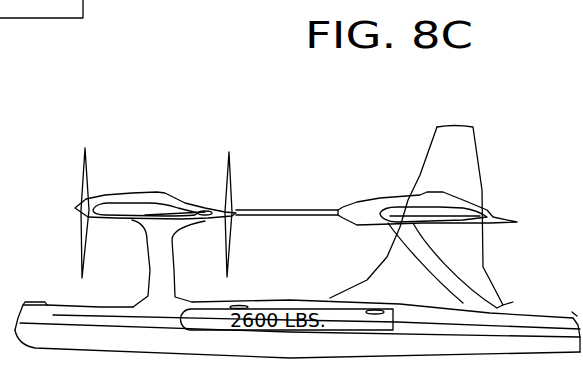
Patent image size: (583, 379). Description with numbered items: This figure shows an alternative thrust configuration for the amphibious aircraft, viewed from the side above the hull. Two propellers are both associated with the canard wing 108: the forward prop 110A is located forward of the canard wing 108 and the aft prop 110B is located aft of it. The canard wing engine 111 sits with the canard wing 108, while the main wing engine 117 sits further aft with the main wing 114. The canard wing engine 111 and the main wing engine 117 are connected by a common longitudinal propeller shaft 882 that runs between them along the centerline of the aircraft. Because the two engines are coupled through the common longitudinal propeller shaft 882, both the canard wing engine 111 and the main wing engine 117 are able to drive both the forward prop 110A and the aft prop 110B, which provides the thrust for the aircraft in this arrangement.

The canard wing 108 is at (115, 220).
The canard wing engine 111 is at (137, 193).
The forward prop 110A is at (78, 161).
The aft prop 110B is at (233, 163).
The common longitudinal propeller shaft 882 is at (297, 206).
The main wing engine 117 is at (390, 195).
The main wing 114 is at (417, 225).